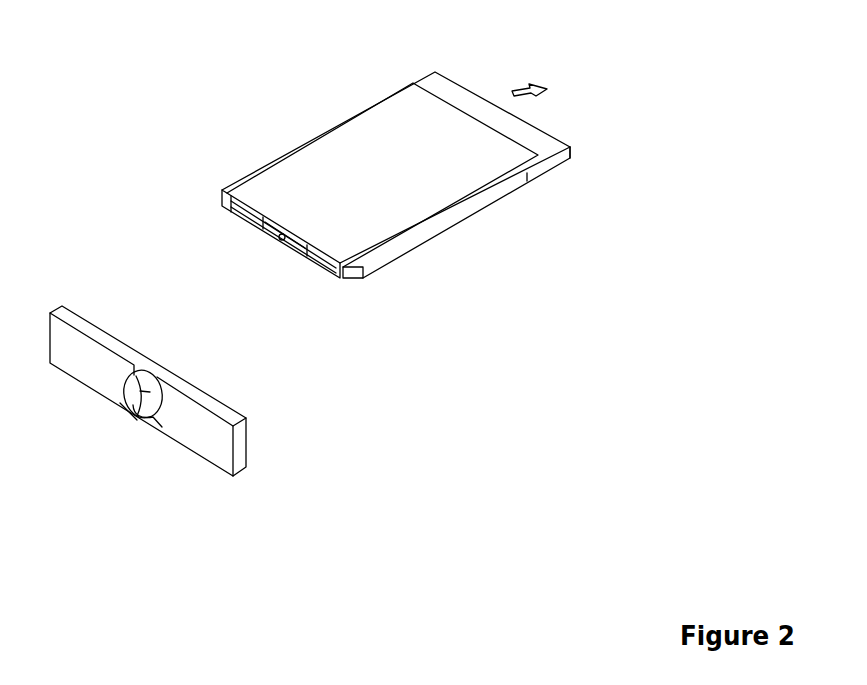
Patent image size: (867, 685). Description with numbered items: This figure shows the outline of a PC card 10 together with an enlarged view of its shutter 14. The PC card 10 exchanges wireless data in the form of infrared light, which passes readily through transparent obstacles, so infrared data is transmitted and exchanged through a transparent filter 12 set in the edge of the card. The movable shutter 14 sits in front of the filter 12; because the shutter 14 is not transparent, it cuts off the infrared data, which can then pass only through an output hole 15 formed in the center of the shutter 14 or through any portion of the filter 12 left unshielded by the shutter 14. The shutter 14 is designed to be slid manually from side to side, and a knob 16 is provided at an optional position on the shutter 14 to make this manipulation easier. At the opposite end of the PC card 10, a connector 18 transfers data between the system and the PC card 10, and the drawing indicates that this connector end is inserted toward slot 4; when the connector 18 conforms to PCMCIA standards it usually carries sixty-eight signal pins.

The PC card 10 is at (318, 133).
The filter 12 is at (320, 260).
The shutter 14 is at (292, 243).
The output hole 15 is at (122, 398).
The knob 16 is at (137, 425).
The connector 18 is at (562, 162).
The slot 4 is at (579, 69).